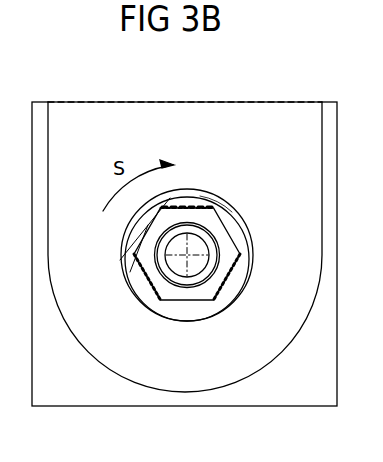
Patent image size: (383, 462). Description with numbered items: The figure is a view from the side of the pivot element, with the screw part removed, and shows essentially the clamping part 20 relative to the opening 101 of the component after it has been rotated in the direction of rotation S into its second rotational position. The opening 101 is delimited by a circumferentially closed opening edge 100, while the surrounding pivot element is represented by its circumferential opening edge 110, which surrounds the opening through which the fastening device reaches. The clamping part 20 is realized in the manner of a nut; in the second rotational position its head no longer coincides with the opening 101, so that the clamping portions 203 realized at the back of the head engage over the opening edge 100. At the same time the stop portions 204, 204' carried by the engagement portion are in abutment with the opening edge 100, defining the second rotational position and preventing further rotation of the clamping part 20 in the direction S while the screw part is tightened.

The clamping part 20 is at (185, 318).
The opening edge 100 is at (240, 254).
The opening 101 is at (233, 223).
The opening edge 110 is at (223, 205).
The clamping portions 203 is at (197, 198).
The stop portions 204 is at (187, 216).
The stop portion 204' is at (113, 235).